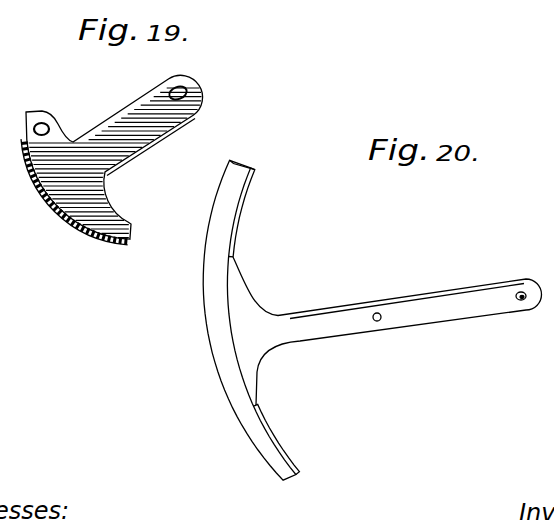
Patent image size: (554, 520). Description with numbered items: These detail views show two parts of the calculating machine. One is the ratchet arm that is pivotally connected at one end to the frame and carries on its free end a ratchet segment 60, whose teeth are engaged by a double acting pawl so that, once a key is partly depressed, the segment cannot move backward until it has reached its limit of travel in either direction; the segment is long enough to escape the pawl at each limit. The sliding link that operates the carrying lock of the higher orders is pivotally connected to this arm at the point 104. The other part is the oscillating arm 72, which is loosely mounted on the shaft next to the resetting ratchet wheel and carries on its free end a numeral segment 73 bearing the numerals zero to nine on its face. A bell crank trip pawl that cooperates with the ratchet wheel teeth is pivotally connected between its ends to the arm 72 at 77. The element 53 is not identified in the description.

In FIG. 19, the toothed segment 53 is at (108, 153).
In FIG. 19, the ratchet segment 60 is at (85, 226).
In FIG. 19, the pivotal connection point 104 is at (44, 122).
In FIG. 20, the numeral segment 73 is at (241, 242).
In FIG. 20, the oscillating arm 72 is at (344, 320).
In FIG. 20, the pivot of trip pawl 77 is at (380, 313).